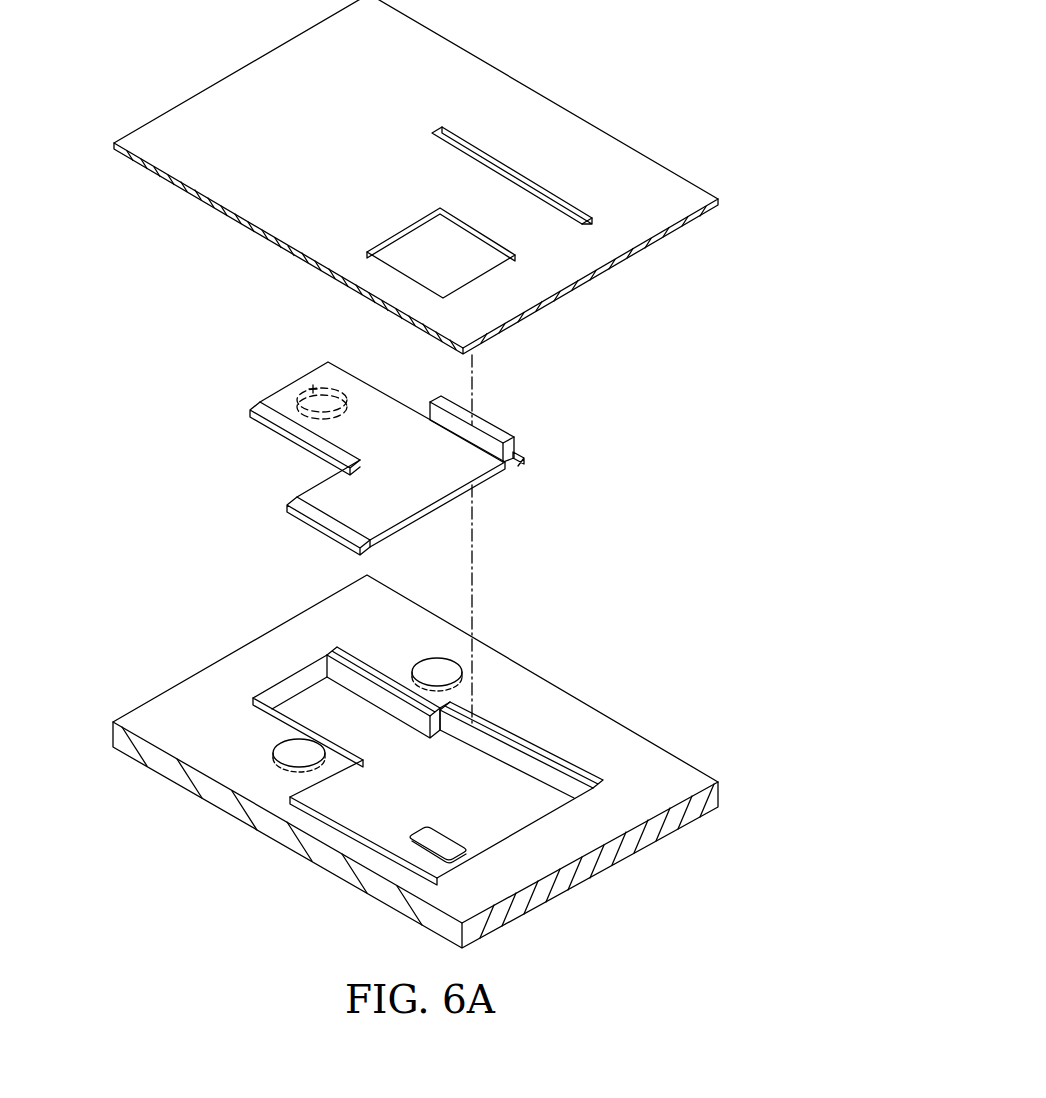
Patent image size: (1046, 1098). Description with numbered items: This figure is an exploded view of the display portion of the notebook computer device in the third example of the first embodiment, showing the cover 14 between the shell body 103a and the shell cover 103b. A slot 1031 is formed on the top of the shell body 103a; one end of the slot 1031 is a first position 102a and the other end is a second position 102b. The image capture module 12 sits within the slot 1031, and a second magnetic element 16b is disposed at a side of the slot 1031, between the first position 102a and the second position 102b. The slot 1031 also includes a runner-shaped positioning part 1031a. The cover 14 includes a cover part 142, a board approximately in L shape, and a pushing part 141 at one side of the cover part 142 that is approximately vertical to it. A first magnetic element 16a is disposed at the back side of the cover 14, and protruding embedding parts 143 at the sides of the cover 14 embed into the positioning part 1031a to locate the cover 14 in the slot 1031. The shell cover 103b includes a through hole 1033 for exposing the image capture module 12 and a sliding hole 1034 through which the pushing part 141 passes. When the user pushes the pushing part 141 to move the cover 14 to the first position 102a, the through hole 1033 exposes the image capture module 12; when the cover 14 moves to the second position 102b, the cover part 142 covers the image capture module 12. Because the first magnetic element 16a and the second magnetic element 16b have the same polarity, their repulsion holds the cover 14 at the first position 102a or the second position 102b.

The image capture module 12 is at (448, 848).
The cover 14 is at (384, 454).
The first magnetic element 16a is at (310, 382).
The second magnetic element 16b is at (438, 668).
The first position 102a is at (503, 720).
The second position 102b is at (573, 768).
The shell body 103a is at (423, 755).
The shell cover 103b is at (422, 177).
The pushing part 141 is at (490, 432).
The cover part 142 is at (470, 467).
The embedding part 143 is at (377, 383).
The slot 1031 is at (496, 789).
The positioning part 1031a is at (515, 752).
The through hole 1033 is at (478, 265).
The sliding hole 1034 is at (487, 157).